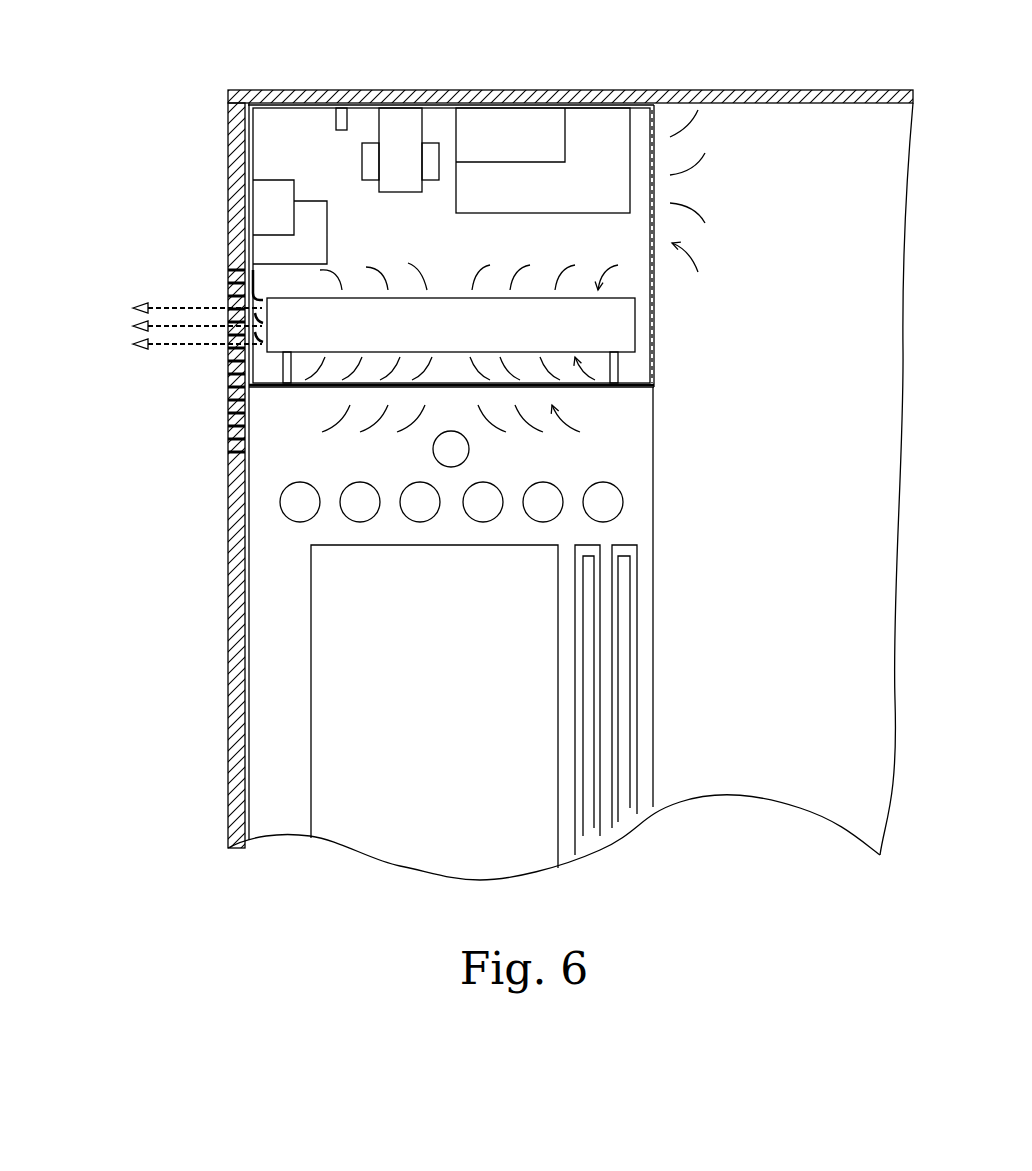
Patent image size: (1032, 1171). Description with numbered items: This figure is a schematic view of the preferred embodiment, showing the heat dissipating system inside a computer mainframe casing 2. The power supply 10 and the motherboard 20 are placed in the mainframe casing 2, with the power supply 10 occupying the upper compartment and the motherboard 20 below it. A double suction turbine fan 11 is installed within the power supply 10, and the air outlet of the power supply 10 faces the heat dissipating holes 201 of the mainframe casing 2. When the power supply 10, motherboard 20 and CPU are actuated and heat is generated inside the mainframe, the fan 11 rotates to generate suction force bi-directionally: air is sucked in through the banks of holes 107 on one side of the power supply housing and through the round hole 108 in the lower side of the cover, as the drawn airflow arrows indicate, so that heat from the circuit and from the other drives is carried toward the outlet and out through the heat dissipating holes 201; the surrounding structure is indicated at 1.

The electronic device housing 1 is at (248, 143).
The mainframe casing 2 is at (713, 90).
The power supply 10 is at (298, 143).
The double suction turbine fan 11 is at (278, 345).
The motherboard 20 is at (285, 585).
The holes 107 is at (648, 145).
The round hole 108 is at (345, 388).
The heat dissipating holes 201 is at (228, 283).